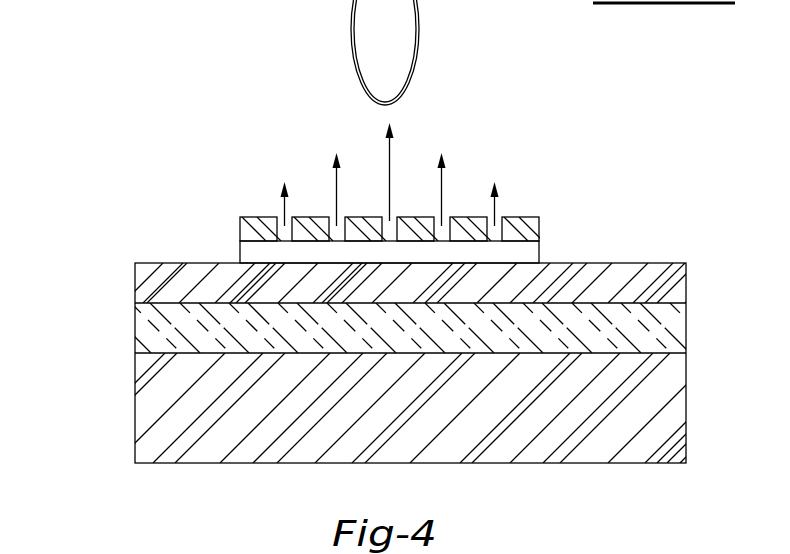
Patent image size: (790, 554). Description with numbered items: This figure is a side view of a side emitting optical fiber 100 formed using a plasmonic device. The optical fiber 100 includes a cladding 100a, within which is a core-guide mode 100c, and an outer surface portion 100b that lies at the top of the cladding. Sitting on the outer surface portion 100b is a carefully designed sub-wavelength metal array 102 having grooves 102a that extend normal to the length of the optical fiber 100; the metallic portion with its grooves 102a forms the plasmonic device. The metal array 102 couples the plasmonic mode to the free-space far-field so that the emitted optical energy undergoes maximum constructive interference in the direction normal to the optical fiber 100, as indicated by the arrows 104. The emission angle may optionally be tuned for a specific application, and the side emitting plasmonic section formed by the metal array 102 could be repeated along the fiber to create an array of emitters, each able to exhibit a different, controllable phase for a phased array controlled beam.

The side emitting optical fiber 100 is at (124, 206).
The cladding 100a is at (167, 443).
The outer surface portion 100b is at (655, 263).
The core-guide mode 100c is at (163, 330).
The sub-wavelength metal array 102 is at (420, 187).
The grooves 102a is at (497, 242).
The arrows 104 is at (389, 150).